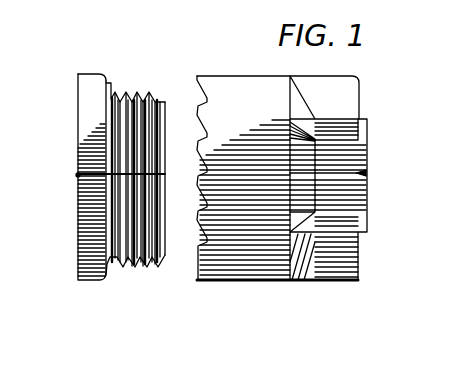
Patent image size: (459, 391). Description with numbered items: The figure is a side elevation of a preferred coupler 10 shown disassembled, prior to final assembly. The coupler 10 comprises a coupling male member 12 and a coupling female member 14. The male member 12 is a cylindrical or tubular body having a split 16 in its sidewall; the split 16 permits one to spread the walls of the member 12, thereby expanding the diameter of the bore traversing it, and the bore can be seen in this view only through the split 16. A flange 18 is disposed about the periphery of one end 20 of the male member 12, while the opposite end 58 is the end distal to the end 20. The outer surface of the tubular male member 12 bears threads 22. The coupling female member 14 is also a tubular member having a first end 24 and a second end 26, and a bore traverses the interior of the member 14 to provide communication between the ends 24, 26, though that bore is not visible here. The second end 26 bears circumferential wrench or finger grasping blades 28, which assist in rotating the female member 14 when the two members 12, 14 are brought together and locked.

The coupler 10 is at (208, 50).
The coupling male member 12 is at (98, 301).
The coupling female member 14 is at (295, 300).
The split 16 is at (78, 176).
The flange 18 is at (88, 74).
The end 20 is at (64, 131).
The threads 22 is at (137, 262).
The first end 24 is at (196, 257).
The second end 26 is at (368, 125).
The wrench or finger grasping blades 28 is at (356, 221).
The end 58 is at (173, 105).